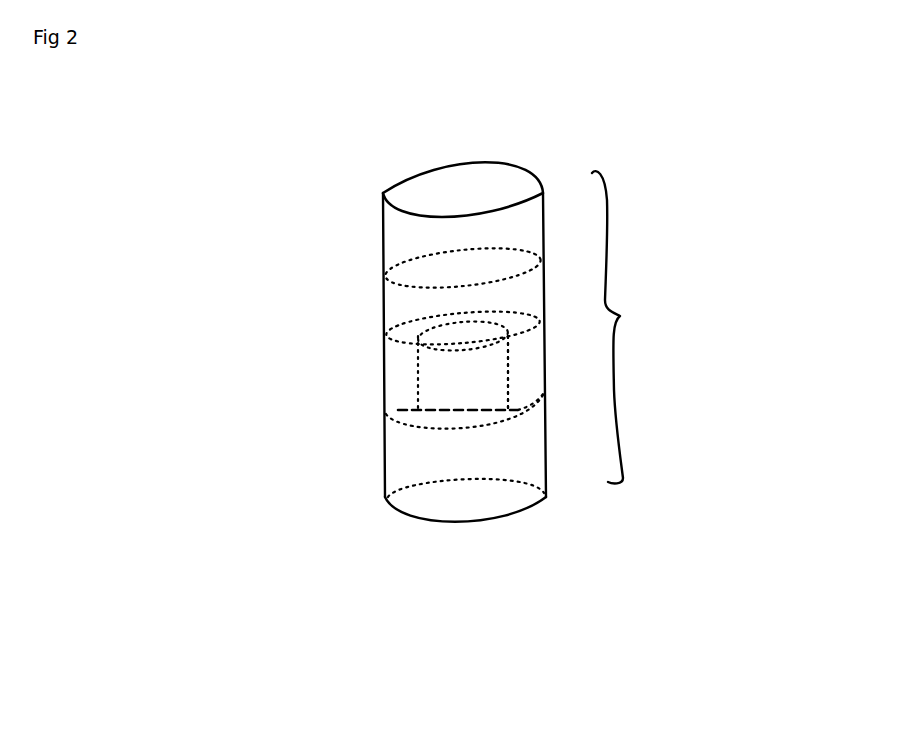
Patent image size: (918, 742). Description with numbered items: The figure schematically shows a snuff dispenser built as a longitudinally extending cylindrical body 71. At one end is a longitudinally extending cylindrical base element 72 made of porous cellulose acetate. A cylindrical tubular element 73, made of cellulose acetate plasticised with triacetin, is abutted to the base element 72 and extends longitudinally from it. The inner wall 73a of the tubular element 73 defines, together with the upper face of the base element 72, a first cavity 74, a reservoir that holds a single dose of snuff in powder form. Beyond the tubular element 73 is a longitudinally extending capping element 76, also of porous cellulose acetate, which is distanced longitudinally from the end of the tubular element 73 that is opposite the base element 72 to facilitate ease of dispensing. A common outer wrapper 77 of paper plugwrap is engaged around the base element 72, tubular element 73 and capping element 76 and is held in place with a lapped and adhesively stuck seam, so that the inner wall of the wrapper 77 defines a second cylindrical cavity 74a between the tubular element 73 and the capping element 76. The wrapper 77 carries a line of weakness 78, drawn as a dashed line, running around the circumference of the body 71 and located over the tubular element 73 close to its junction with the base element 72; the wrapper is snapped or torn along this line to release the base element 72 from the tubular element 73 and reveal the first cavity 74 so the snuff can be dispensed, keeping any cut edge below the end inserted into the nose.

The cylindrical body 71 is at (628, 327).
The base element 72 is at (420, 478).
The tubular element 73 is at (402, 377).
The inner wall 73a is at (510, 382).
The first cavity 74 is at (472, 392).
The second cylindrical cavity 74a is at (405, 305).
The capping element 76 is at (488, 190).
The common outer wrapper 77 is at (383, 232).
The line of weakness 78 is at (385, 407).